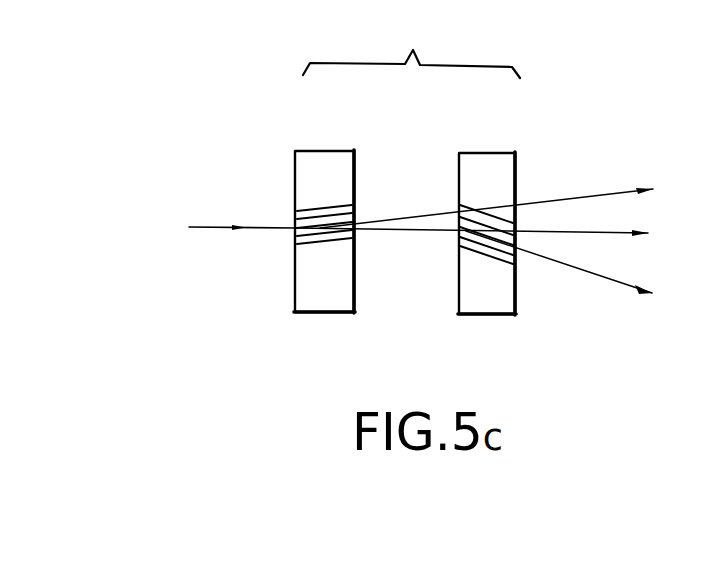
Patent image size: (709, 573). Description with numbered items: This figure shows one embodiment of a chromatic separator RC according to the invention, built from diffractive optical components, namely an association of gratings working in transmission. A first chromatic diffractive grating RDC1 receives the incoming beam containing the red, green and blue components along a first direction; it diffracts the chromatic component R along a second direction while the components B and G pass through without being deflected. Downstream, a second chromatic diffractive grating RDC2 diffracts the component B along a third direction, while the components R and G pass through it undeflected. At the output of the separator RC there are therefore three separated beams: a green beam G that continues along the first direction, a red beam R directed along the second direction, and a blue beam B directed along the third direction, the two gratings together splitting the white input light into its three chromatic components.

The first chromatic diffractive grating RDC1 is at (315, 157).
The second chromatic diffractive grating RDC2 is at (500, 167).
The separator RC is at (411, 48).
The red beam R is at (496, 199).
The green beam G is at (484, 236).
The blue beam B is at (569, 268).